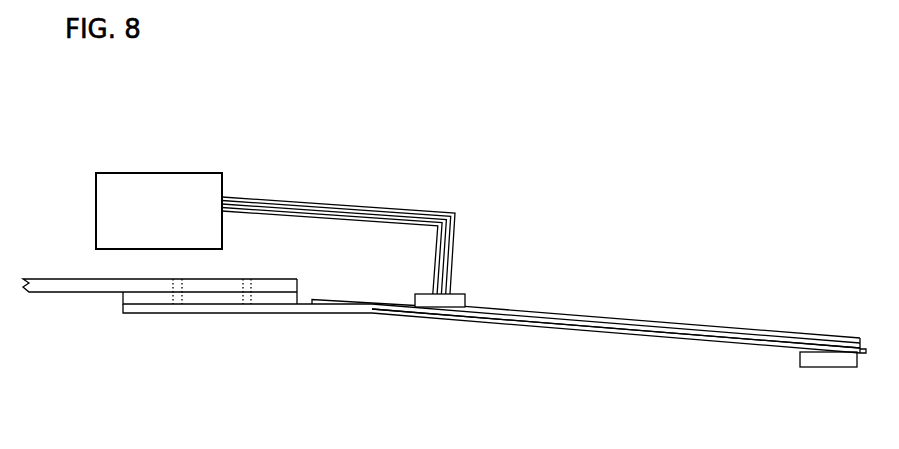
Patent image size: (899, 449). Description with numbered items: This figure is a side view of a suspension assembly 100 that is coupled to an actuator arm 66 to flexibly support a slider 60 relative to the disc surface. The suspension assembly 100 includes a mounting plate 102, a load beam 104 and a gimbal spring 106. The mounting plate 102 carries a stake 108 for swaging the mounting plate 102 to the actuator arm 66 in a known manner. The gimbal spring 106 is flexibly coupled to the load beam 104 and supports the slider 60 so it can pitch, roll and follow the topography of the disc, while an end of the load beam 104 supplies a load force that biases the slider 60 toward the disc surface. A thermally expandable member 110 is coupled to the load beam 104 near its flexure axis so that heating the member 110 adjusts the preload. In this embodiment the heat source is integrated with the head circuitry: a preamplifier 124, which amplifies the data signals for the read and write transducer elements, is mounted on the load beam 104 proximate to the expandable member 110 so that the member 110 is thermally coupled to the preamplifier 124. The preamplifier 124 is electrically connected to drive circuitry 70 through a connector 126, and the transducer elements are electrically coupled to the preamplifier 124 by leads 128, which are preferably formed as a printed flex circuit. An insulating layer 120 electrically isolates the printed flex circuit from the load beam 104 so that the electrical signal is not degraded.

The drive circuitry 70 is at (190, 163).
The connector 126 is at (320, 200).
The preamplifier 124 is at (462, 285).
The actuator arm 66 is at (55, 288).
The stake 108 is at (207, 283).
The mounting plate 102 is at (147, 298).
The load beam 104 is at (205, 308).
The thermally expandable member 110 is at (368, 290).
The leads 128 is at (727, 318).
The suspension assembly 100 is at (575, 302).
The insulating layer 120 is at (575, 302).
The gimbal spring 106 is at (730, 343).
The slider 60 is at (832, 367).